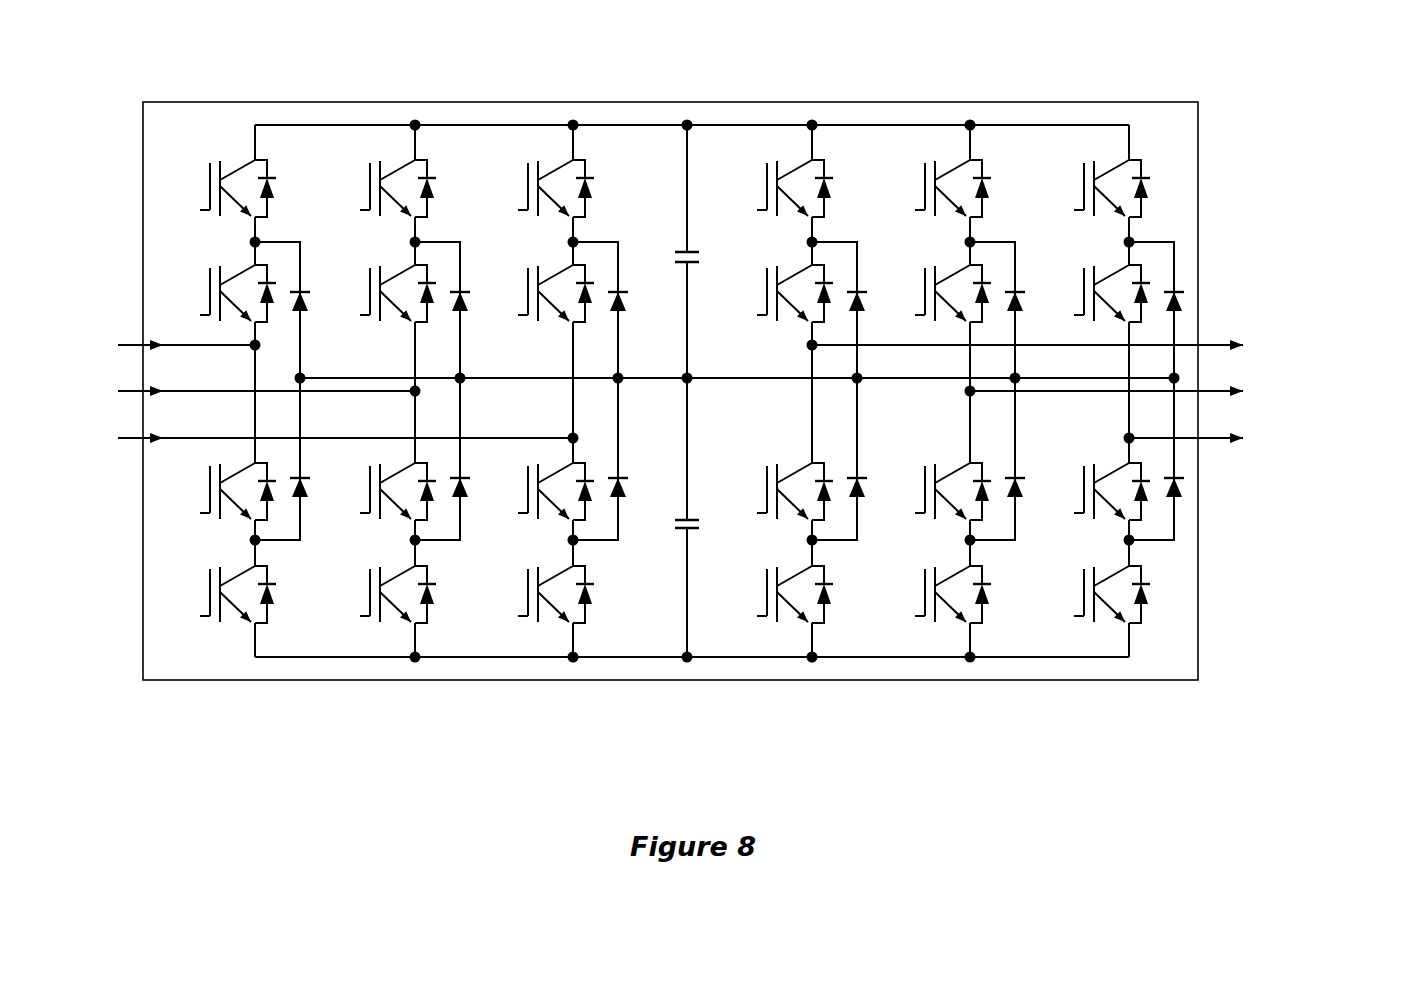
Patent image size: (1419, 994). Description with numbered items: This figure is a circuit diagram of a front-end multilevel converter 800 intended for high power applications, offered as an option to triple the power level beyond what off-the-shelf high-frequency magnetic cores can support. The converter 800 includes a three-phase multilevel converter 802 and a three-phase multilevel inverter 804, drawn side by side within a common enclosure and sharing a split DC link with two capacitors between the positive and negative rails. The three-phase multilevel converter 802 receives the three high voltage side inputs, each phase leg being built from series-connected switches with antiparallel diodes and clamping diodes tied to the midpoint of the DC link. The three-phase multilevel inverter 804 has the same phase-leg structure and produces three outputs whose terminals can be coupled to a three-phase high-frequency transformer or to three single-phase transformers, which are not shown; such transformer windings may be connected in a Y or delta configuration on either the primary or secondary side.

The front-end multilevel converter 800 is at (696, 28).
The three-phase multilevel converter 802 is at (448, 112).
The three-phase multilevel inverter 804 is at (905, 122).